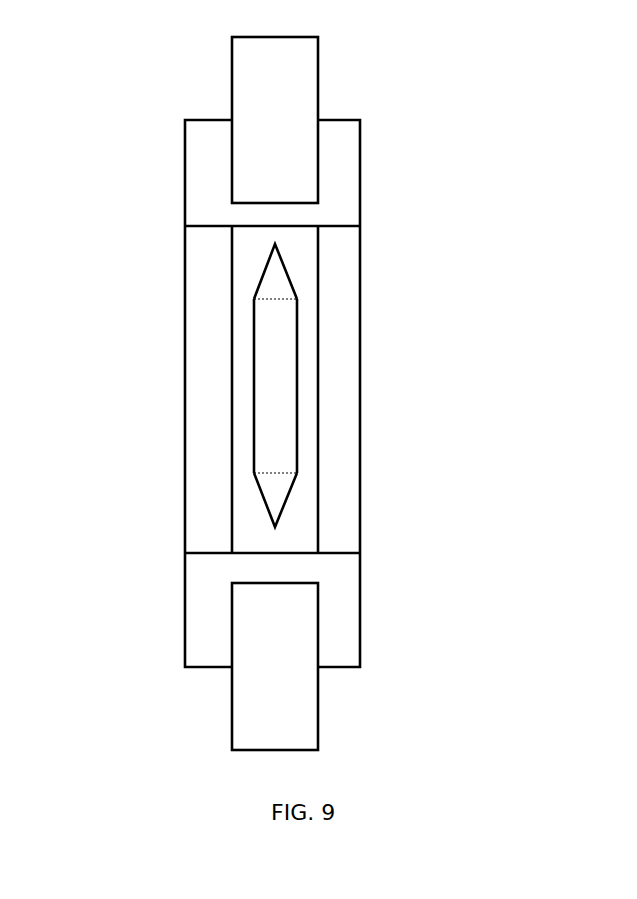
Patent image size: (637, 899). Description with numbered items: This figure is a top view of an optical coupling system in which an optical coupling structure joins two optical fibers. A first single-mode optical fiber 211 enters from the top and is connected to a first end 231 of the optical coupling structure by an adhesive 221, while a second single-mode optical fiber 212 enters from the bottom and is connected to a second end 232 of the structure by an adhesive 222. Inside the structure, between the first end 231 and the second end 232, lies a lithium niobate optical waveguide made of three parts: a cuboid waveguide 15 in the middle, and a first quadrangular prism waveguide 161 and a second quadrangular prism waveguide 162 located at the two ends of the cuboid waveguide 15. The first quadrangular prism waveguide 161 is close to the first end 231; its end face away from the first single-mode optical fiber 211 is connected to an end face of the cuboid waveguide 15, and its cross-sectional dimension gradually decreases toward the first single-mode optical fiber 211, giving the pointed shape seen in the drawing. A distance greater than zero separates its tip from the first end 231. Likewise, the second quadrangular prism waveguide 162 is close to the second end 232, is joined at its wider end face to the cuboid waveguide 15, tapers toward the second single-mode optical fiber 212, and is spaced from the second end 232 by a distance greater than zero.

The cuboid waveguide 15 is at (250, 366).
The first quadrangular prism waveguide 161 is at (250, 282).
The second quadrangular prism waveguide 162 is at (250, 492).
The first single-mode optical fiber 211 is at (230, 95).
The second single-mode optical fiber 212 is at (228, 713).
The adhesive 221 is at (182, 178).
The adhesive 222 is at (182, 610).
The first end 231 is at (360, 226).
The second end 232 is at (360, 553).